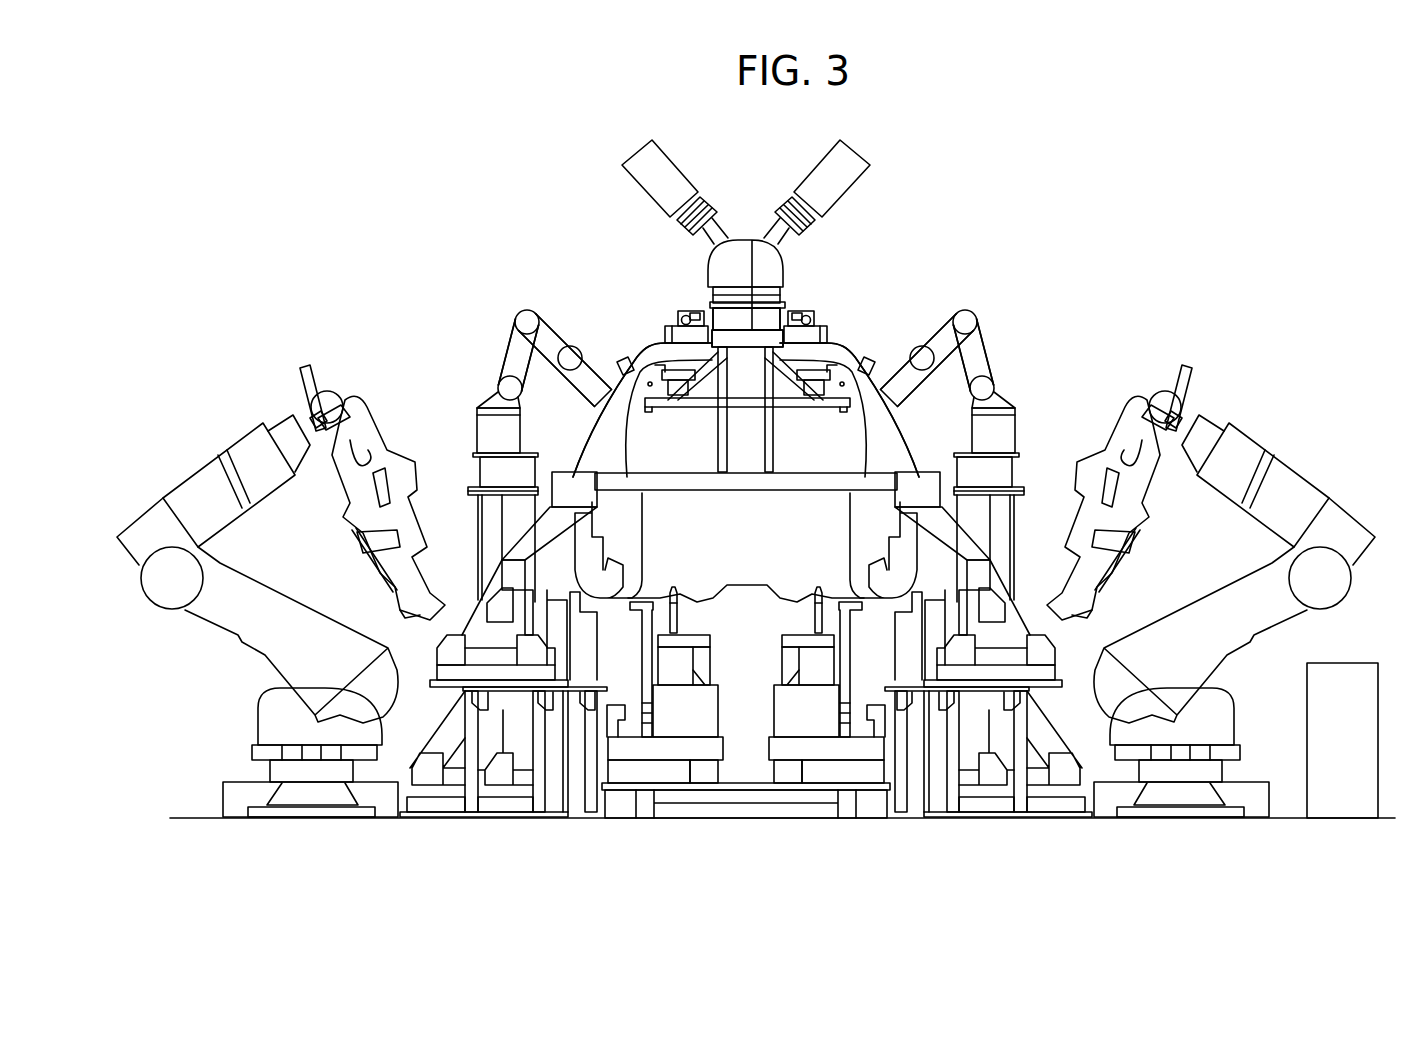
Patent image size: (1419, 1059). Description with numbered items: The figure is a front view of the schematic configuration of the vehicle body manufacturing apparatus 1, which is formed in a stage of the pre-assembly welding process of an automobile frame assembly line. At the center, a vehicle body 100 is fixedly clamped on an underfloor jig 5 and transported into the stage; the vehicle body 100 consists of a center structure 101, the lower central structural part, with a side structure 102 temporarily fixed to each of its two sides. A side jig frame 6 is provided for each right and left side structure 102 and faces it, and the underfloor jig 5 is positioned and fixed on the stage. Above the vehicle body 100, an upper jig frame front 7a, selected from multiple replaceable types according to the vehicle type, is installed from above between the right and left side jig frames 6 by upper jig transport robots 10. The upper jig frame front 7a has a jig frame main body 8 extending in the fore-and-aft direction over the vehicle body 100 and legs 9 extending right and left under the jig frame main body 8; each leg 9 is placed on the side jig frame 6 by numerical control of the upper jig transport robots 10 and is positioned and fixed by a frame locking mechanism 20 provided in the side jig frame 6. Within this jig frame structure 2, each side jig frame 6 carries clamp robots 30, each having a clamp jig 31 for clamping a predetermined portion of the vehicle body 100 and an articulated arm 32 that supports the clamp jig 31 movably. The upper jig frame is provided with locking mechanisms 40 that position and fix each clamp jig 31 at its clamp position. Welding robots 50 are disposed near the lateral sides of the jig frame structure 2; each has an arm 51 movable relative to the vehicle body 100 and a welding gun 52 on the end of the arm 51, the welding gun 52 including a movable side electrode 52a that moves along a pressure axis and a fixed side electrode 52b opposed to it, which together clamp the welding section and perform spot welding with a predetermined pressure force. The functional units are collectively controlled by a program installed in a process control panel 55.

The vehicle body manufacturing apparatus 1 is at (1080, 180).
The jig frame structure 2 is at (1075, 324).
The underfloor jig 5 is at (744, 783).
The side jig frame 6 is at (478, 470).
The upper jig frame front 7a is at (722, 333).
The jig frame main body 8 is at (764, 328).
The legs 9 is at (622, 486).
The upper jig transport robot 10 is at (692, 170).
The frame locking mechanism 20 is at (565, 473).
The clamp robot 30 is at (497, 327).
The clamp jig 31 is at (616, 368).
The articulated arm 32 is at (530, 307).
The locking mechanism 40 is at (680, 313).
The welding robot 50 is at (168, 422).
The arm 51 is at (195, 493).
The welding gun 52 is at (368, 415).
The movable side electrode 52a is at (380, 571).
The fixed side electrode 52b is at (402, 610).
The process control panel 55 is at (1362, 662).
The vehicle body 100 is at (643, 333).
The center structure 101 is at (818, 352).
The side structure 102 is at (630, 432).